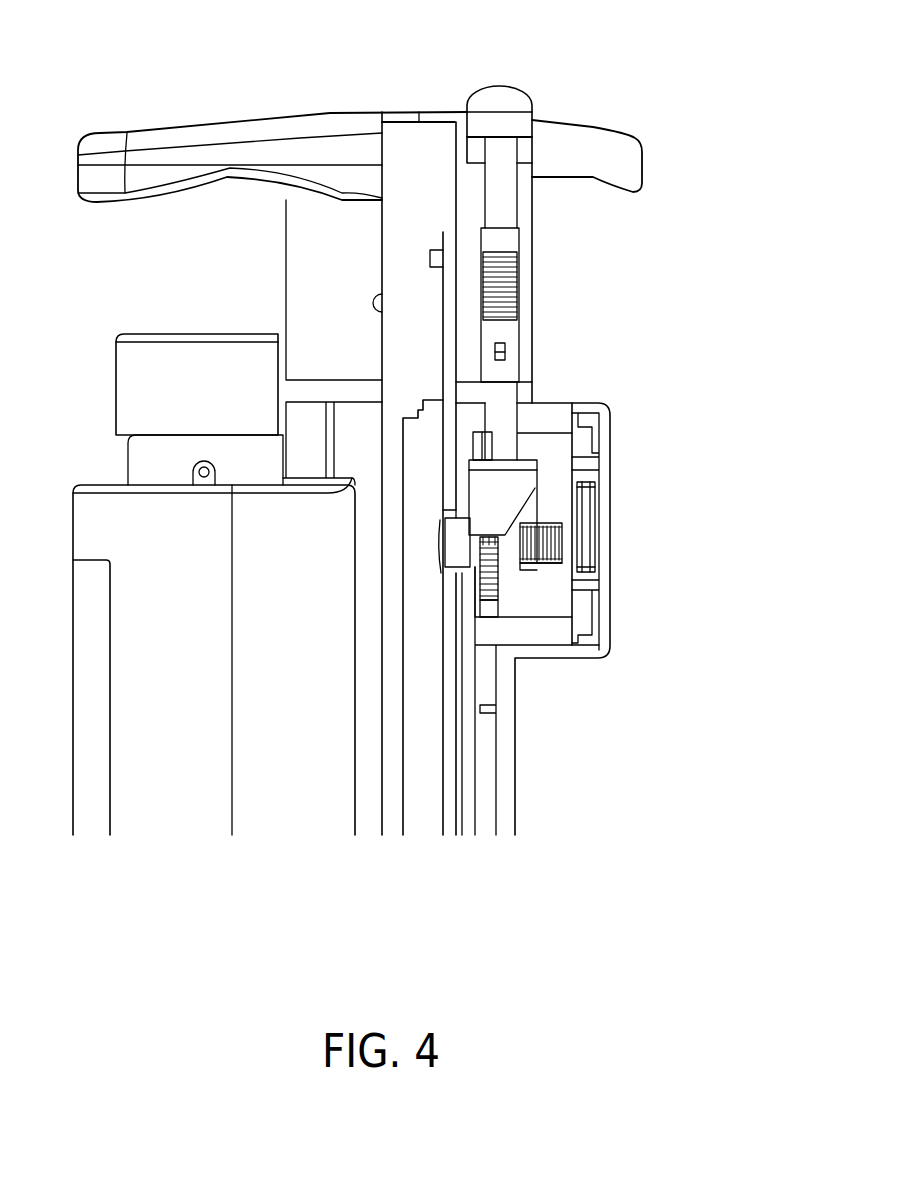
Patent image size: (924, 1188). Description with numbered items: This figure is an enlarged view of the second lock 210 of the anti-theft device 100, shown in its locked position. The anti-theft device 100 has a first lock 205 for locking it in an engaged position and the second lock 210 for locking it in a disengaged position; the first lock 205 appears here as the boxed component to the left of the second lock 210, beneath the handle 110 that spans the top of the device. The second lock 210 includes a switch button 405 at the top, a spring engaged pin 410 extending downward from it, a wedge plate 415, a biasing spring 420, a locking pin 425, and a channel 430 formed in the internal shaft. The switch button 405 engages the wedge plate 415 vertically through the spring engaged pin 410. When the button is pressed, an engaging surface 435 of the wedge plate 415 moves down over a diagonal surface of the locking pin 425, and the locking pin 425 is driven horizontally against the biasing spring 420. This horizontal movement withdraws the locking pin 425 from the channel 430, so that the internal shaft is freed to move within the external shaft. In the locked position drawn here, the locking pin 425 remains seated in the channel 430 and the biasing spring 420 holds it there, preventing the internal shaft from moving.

The anti-theft device 100 is at (97, 90).
The handle 110 is at (233, 130).
The first lock 205 is at (135, 397).
The second lock 210 is at (713, 266).
The switch button 405 is at (500, 102).
The spring engaged pin 410 is at (520, 270).
The wedge plate 415 is at (540, 470).
The biasing spring 420 is at (553, 535).
The locking pin 425 is at (507, 558).
The channel 430 is at (447, 578).
The engaging surface 435 is at (518, 500).